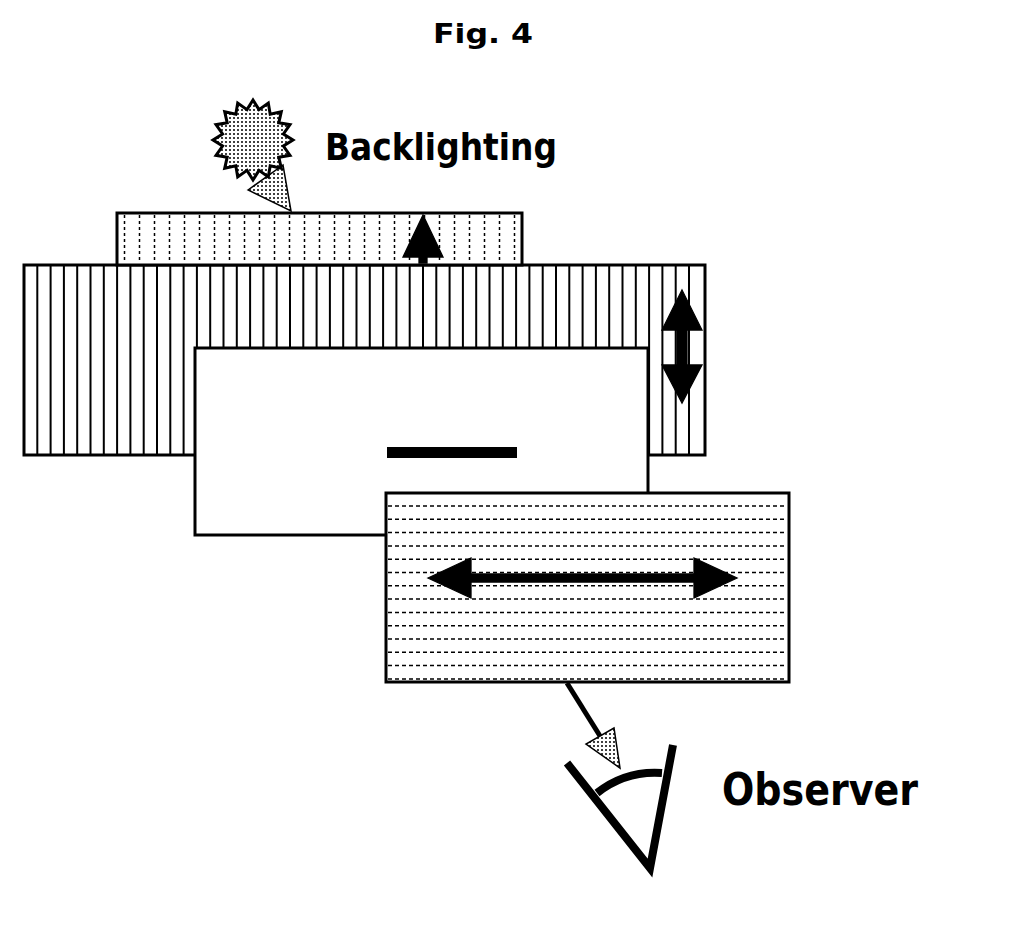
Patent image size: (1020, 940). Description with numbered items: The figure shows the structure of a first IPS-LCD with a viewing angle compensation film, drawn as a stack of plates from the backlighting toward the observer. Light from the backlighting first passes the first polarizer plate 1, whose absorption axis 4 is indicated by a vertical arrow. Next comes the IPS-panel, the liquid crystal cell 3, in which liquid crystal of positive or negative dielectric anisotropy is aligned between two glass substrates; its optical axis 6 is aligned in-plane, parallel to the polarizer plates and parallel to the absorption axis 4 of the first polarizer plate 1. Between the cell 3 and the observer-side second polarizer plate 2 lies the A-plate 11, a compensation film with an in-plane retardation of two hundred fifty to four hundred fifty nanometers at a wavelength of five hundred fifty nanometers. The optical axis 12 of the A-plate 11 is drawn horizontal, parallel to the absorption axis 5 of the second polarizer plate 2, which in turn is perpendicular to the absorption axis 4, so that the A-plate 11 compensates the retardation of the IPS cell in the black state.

The first polarizer plate 1 is at (319, 239).
The second polarizer plate 2 is at (587, 587).
The liquid crystal cell 3 is at (364, 360).
The absorption axis of first polarizer plate 4 is at (444, 239).
The absorption axis of second polarizer plate 5 is at (582, 593).
The optical axis of liquid crystal 6 is at (661, 346).
The A-plate 11 is at (421, 441).
The optical axis of A-plate 12 is at (370, 435).